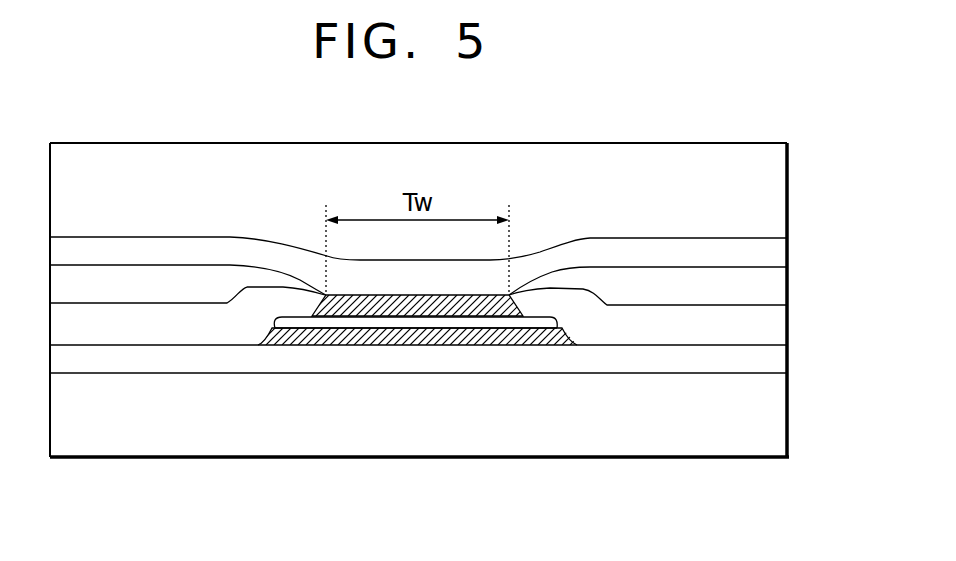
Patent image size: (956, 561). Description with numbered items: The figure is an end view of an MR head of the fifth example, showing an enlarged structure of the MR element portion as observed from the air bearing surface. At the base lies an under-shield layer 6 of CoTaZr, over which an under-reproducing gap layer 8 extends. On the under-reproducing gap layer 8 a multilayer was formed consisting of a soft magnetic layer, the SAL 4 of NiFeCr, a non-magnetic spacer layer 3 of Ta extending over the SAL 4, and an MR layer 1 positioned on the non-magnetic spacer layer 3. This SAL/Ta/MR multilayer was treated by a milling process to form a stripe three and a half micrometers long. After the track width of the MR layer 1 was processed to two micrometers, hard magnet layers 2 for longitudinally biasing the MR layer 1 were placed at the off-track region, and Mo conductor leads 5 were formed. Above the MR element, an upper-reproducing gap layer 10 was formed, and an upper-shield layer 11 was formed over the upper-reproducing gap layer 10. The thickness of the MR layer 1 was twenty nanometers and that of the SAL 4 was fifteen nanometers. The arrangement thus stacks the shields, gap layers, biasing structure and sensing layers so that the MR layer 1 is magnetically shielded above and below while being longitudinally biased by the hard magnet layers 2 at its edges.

The MR layer 1 is at (478, 297).
The hard magnet layers 2 is at (748, 329).
The non-magnetic spacer layer 3 is at (427, 323).
The soft magnetic layer (SAL) 4 is at (340, 333).
The conductor leads 5 is at (748, 294).
The under-shield layer 6 is at (748, 409).
The under-reproducing gap layer 8 is at (748, 362).
The upper-reproducing gap layer 10 is at (748, 252).
The upper-shield layer 11 is at (748, 189).